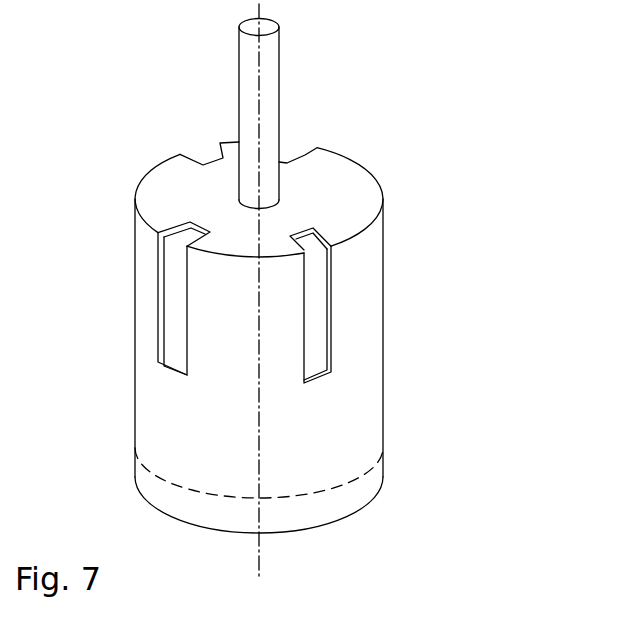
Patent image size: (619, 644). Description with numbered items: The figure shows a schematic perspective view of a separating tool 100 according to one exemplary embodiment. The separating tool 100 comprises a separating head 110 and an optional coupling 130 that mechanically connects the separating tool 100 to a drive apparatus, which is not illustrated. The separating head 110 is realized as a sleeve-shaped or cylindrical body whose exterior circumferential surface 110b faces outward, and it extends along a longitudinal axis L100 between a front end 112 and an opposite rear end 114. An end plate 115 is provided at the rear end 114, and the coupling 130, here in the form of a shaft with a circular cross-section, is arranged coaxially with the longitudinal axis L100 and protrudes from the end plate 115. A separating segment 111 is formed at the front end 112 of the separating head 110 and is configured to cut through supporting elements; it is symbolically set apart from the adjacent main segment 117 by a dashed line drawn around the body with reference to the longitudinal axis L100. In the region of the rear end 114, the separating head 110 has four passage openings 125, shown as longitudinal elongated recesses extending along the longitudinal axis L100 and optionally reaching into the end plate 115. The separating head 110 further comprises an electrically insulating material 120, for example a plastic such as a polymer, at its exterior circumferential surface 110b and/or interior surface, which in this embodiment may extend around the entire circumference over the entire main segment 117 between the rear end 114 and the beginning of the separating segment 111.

The separating tool 100 is at (362, 116).
The separating head 110 is at (384, 383).
The exterior circumferential surface 110b is at (351, 430).
The separating segment 111 is at (312, 507).
The front end 112 is at (180, 520).
The rear end 114 is at (137, 192).
The end plate 115 is at (363, 181).
The main segment 117 is at (173, 438).
The electrically insulating material 120 is at (168, 405).
The passage openings 125 is at (220, 150).
The coupling 130 is at (281, 44).
The longitudinal axis L100 is at (257, 566).